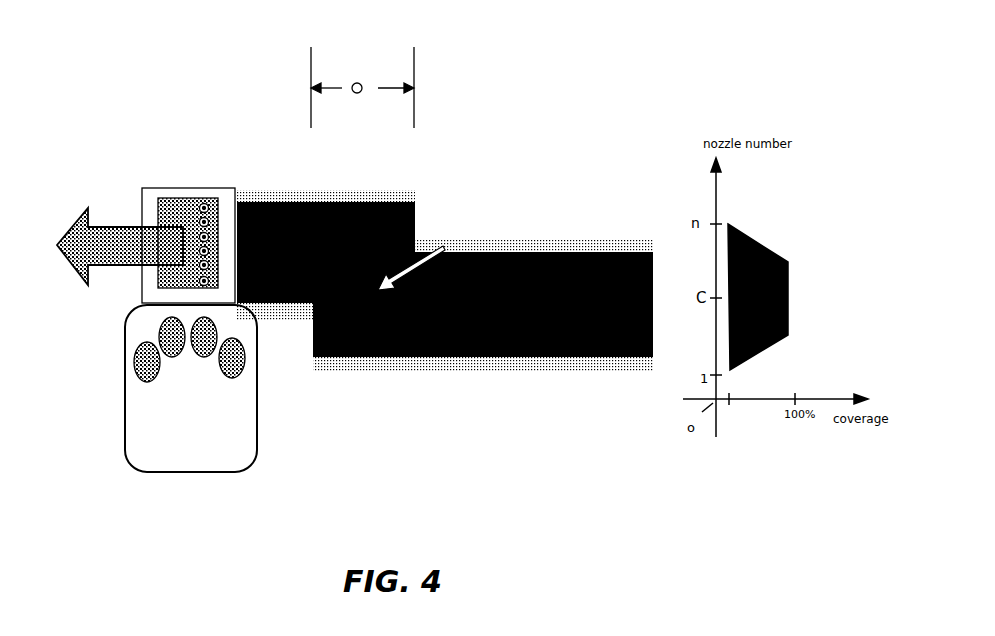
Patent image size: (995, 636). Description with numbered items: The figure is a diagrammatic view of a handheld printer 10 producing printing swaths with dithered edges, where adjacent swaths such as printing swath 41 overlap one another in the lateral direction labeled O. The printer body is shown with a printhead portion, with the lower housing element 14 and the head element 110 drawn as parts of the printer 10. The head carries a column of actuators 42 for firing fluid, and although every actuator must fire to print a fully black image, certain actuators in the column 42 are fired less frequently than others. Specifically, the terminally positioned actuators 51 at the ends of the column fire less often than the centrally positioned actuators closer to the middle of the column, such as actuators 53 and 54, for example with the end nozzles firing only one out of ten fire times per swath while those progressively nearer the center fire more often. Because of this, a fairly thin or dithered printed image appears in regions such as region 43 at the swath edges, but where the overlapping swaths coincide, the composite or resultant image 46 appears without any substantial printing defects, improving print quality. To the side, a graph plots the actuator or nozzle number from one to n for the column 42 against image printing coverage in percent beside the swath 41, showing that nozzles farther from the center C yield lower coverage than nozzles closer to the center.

The handheld printer 10 is at (92, 352).
The ink cartridge body 14 is at (125, 423).
The printing swath 41 is at (653, 305).
The column of actuators 42 is at (208, 194).
The dithered region 43 is at (282, 205).
The composite image 46 is at (422, 255).
The terminally positioned actuators 51 is at (173, 297).
The centrally positioned actuator 53 is at (209, 223).
The centrally positioned actuator 54 is at (209, 240).
The print head 110 is at (185, 198).